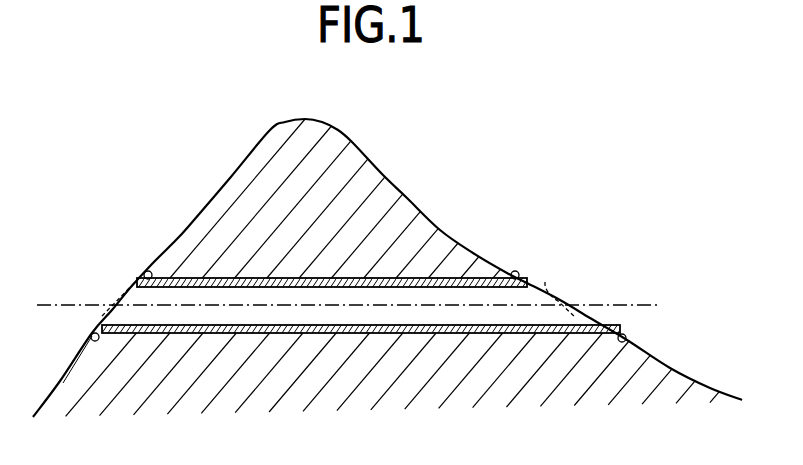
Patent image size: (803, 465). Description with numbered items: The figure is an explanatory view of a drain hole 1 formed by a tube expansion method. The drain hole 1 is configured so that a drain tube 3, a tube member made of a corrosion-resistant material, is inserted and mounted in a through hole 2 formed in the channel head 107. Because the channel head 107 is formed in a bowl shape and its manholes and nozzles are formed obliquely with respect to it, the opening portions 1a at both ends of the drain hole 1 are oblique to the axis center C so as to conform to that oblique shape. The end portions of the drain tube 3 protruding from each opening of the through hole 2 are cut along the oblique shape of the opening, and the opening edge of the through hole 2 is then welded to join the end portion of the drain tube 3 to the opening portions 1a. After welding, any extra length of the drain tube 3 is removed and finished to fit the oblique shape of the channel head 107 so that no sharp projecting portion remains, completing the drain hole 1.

The channel head 107 is at (382, 180).
The drain hole 1 is at (124, 288).
The opening portion 1a is at (102, 316).
The through hole 2 is at (460, 278).
The drain tube 3 is at (578, 320).
The axis center C is at (66, 305).